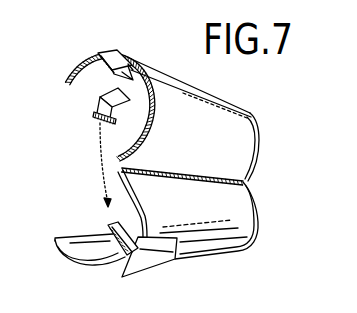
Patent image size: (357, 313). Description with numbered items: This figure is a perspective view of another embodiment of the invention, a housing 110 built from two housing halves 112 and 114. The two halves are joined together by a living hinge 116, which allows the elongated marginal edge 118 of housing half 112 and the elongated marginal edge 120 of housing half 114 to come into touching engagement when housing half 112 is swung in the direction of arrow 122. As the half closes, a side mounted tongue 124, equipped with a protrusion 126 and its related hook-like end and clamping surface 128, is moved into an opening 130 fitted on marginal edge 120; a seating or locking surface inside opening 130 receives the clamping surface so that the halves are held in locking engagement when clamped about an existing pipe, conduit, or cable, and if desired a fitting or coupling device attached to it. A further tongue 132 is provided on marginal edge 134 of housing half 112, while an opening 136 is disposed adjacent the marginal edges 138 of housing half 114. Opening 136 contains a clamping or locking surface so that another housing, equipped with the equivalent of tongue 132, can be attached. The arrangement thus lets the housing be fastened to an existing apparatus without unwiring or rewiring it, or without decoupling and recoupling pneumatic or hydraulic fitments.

The housing 110 is at (215, 93).
The housing half 112 is at (250, 145).
The housing half 114 is at (242, 212).
The living hinge 116 is at (247, 182).
The elongated marginal edge 118 is at (65, 82).
The elongated marginal edge 120 is at (65, 232).
The arrow 122 is at (98, 170).
The side mounted tongue 124 is at (115, 100).
The protrusion 126 is at (98, 110).
The clamping surface 128 is at (97, 120).
The opening 130 is at (118, 226).
The tongue 132 is at (103, 51).
The marginal edge 134 is at (125, 151).
The opening 136 is at (122, 276).
The marginal edges 138 is at (88, 268).